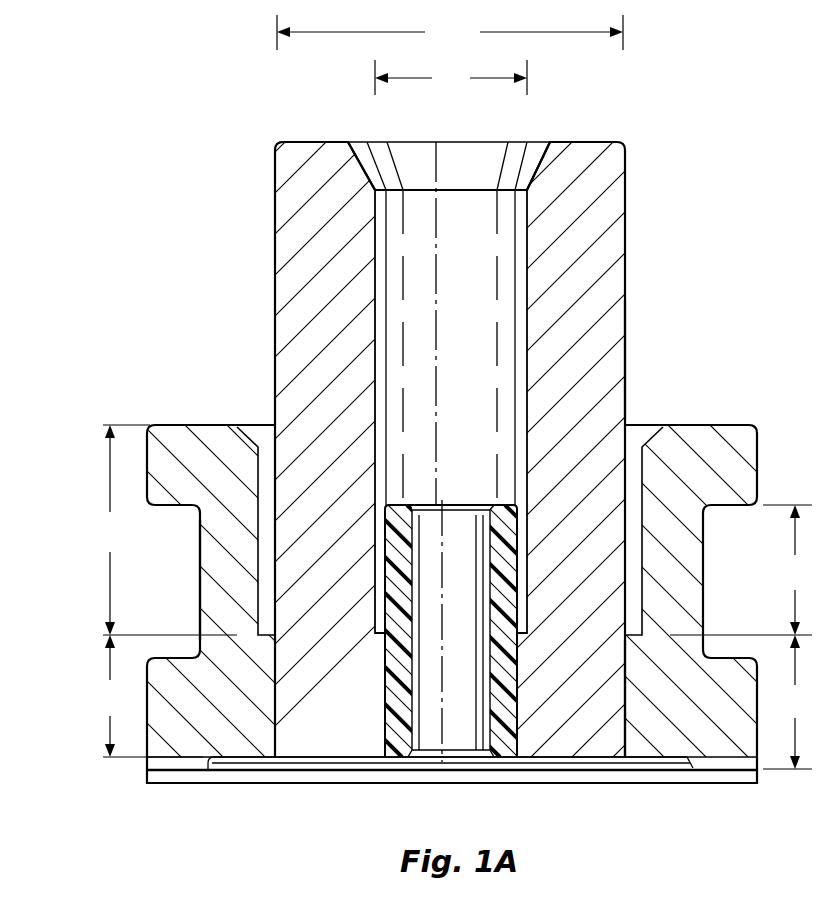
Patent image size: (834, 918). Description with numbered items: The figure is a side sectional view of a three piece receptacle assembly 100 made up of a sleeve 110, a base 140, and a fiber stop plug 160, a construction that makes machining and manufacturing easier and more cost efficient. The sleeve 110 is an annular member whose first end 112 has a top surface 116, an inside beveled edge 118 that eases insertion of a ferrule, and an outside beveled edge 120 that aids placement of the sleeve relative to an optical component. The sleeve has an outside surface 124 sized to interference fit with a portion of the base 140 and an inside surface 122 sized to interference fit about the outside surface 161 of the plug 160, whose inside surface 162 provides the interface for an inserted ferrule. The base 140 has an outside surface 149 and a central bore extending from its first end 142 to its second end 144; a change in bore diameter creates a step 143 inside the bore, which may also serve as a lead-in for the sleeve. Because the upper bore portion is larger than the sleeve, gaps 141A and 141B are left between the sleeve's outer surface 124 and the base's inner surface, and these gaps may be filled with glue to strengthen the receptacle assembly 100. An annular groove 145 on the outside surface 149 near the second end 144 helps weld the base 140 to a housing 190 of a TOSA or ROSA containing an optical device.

The receptacle assembly 100 is at (176, 266).
The sleeve 110 is at (641, 222).
The first end 112 is at (529, 131).
The top surface 116 is at (403, 140).
The inside beveled edge 118 is at (363, 160).
The outside beveled edge 120 is at (277, 143).
The inside surface 122 is at (375, 354).
The outside surface 124 is at (627, 353).
The base 140 is at (170, 587).
The gap 141A is at (637, 460).
The gap 141B is at (267, 450).
The first end 142 is at (194, 413).
The step 143 is at (623, 637).
The second end 144 is at (184, 782).
The annular groove 145 is at (245, 763).
The outside surface 149 is at (232, 532).
The fiber stop plug 160 is at (448, 760).
The outside surface 161 is at (507, 737).
The inside surface 162 is at (487, 697).
The housing 190 is at (740, 775).